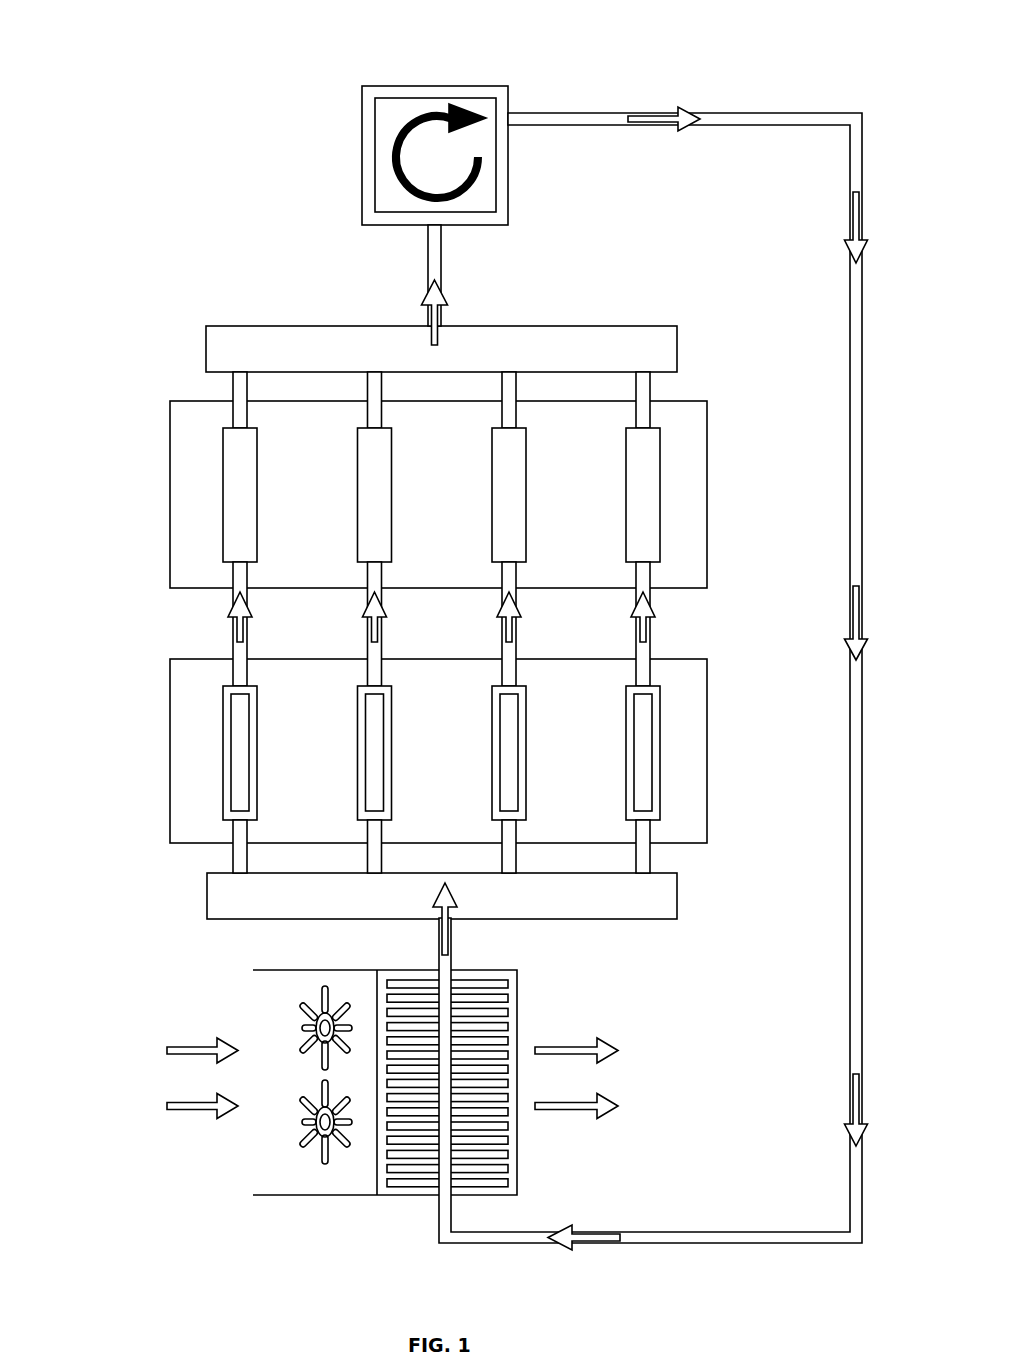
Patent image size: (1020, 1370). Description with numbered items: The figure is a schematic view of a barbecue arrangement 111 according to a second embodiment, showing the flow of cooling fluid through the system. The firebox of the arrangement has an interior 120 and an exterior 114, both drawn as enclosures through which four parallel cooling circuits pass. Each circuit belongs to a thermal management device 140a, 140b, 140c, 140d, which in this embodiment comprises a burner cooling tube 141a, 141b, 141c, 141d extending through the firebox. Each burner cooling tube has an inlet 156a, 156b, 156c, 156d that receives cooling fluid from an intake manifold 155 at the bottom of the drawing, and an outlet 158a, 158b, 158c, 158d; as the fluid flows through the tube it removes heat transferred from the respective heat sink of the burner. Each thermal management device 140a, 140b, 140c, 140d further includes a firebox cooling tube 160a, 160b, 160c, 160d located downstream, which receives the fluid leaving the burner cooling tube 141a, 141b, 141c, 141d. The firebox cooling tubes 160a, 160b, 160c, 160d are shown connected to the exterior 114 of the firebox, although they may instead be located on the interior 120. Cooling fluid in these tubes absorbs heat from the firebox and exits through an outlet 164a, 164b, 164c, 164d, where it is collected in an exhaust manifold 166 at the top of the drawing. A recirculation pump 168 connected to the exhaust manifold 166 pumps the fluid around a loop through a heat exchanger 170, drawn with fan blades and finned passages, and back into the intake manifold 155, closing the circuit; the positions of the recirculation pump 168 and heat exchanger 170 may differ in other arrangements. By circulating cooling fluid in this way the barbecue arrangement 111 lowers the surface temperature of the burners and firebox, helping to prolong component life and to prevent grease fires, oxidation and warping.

The barbecue arrangement 111 is at (143, 118).
The exterior 114 is at (707, 498).
The interior 120 is at (707, 750).
The thermal management device 140a is at (166, 752).
The thermal management device 140b is at (329, 817).
The thermal management device 140c is at (509, 825).
The thermal management device 140d is at (661, 752).
The burner cooling tube 141a is at (213, 762).
The burner cooling tube 141b is at (359, 732).
The burner cooling tube 141c is at (493, 732).
The burner cooling tube 141d is at (627, 732).
The intake manifold 155 is at (640, 905).
The inlet 156a is at (236, 832).
The inlet 156b is at (372, 832).
The inlet 156c is at (505, 832).
The inlet 156d is at (643, 832).
The outlet 158a is at (232, 688).
The outlet 158b is at (367, 688).
The outlet 158c is at (502, 688).
The outlet 158d is at (636, 688).
The firebox cooling tube 160a is at (240, 501).
The firebox cooling tube 160b is at (375, 501).
The firebox cooling tube 160c is at (510, 501).
The firebox cooling tube 160d is at (650, 467).
The outlet 164a is at (238, 418).
The outlet 164b is at (368, 388).
The outlet 164c is at (512, 387).
The outlet 164d is at (645, 391).
The exhaust manifold 166 is at (633, 337).
The recirculation pump 168 is at (400, 108).
The heat exchanger 170 is at (517, 1150).